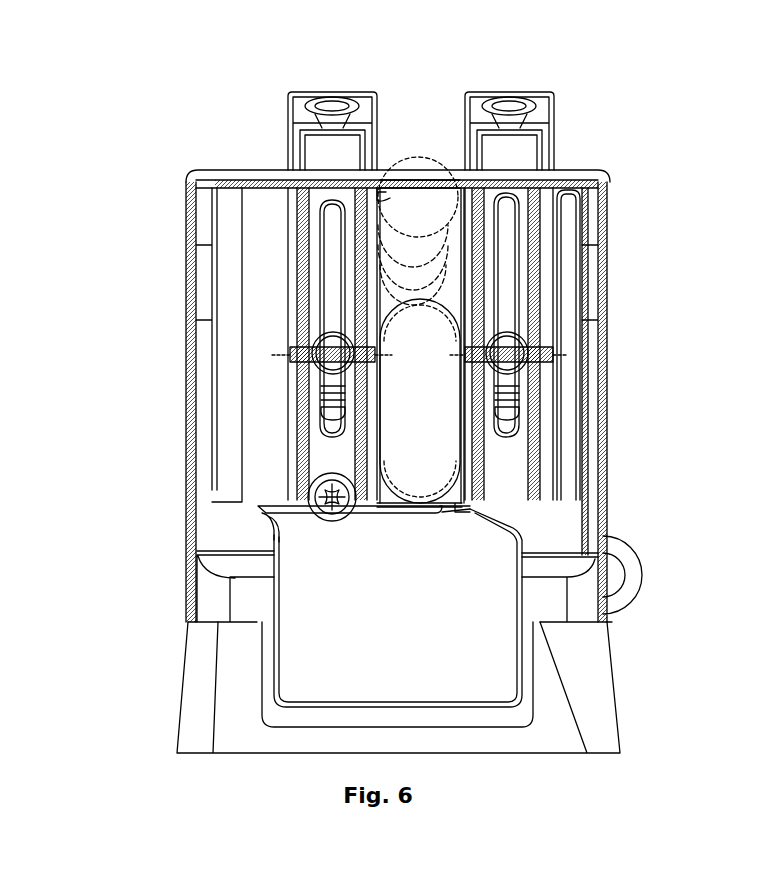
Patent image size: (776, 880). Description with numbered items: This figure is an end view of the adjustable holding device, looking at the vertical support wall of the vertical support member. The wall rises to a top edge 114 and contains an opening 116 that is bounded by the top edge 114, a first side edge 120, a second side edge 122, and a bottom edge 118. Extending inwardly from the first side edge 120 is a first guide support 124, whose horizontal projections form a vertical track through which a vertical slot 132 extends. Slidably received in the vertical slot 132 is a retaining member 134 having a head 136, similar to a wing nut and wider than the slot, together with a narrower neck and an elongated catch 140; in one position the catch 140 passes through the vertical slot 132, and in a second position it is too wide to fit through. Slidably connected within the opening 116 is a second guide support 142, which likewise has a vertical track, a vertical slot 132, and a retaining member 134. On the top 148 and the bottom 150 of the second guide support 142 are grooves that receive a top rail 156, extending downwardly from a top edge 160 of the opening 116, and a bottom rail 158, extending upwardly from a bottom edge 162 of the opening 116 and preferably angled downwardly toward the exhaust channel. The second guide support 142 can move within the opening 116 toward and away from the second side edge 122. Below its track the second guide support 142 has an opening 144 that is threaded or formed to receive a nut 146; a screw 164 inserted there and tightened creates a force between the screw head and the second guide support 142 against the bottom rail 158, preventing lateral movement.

The top edge 114 is at (240, 175).
The opening 116 is at (457, 210).
The bottom edge 118 is at (318, 500).
The first side edge 120 is at (609, 313).
The second side edge 122 is at (186, 290).
The first guide support 124 is at (545, 223).
The vertical slot 132 is at (335, 242).
The retaining member 134 is at (328, 368).
The head 136 is at (362, 350).
The catch 140 is at (312, 344).
The second guide support 142 is at (288, 245).
The opening 144 is at (317, 498).
The nut 146 is at (313, 510).
The top 148 is at (266, 185).
The bottom 150 is at (452, 505).
The top rail 156 is at (397, 188).
The bottom rail 158 is at (393, 503).
The top edge 160 is at (410, 183).
The bottom edge 162 is at (383, 192).
The screw 164 is at (330, 512).